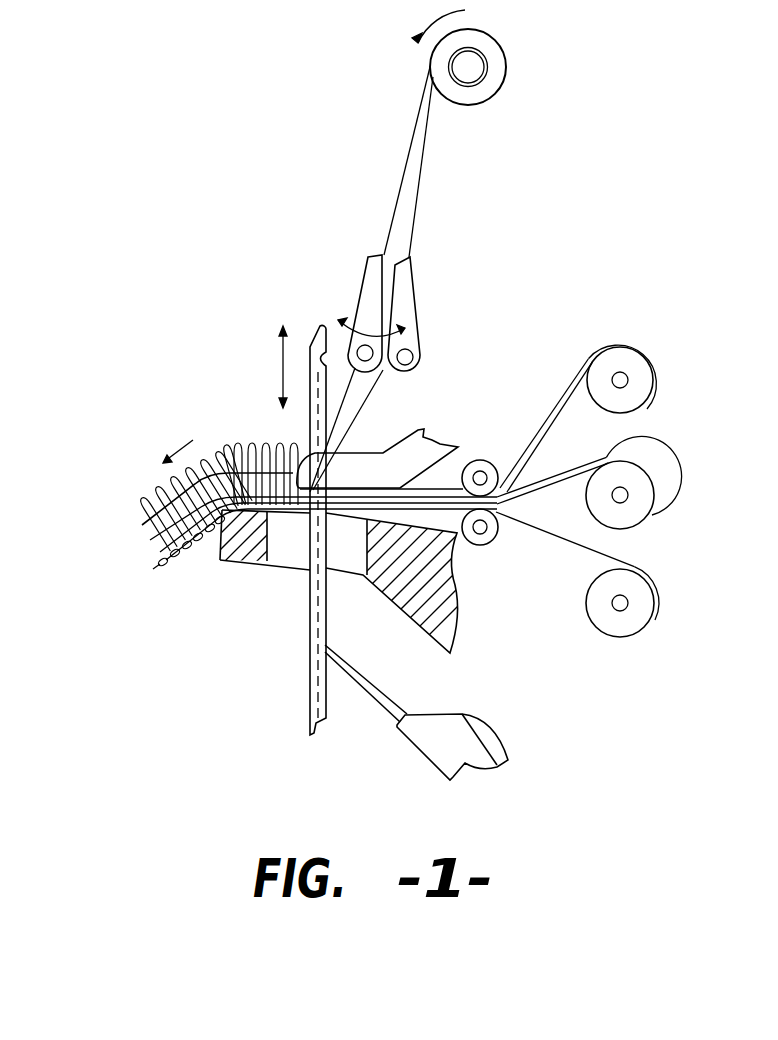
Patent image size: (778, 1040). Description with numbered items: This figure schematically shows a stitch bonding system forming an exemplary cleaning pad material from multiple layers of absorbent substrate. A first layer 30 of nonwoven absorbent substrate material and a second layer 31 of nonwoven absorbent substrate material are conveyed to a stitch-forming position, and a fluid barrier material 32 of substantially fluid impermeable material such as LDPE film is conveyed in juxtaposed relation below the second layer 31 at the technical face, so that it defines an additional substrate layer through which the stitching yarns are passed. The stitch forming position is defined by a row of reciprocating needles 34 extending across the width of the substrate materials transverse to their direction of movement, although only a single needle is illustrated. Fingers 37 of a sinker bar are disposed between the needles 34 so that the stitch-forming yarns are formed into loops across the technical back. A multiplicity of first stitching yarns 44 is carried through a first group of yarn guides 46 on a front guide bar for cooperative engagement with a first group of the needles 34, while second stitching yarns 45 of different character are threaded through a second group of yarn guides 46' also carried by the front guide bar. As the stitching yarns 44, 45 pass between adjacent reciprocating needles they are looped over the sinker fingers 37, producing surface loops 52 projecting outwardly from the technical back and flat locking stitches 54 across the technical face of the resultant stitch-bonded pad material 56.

The first layer 30 is at (553, 408).
The second layer 31 is at (557, 477).
The fluid barrier material 32 is at (582, 552).
The reciprocating needles 34 is at (320, 326).
The fingers of a sinker bar 37 is at (422, 428).
The first stitching yarns 44 is at (403, 168).
The second stitching yarns 45 is at (413, 197).
The first group of yarn guides 46 is at (353, 293).
The second group of yarn guides 46' is at (443, 314).
The surface loops 52 is at (220, 437).
The flat locking stitches 54 is at (183, 553).
The stitch-bonded pad material 56 is at (163, 553).